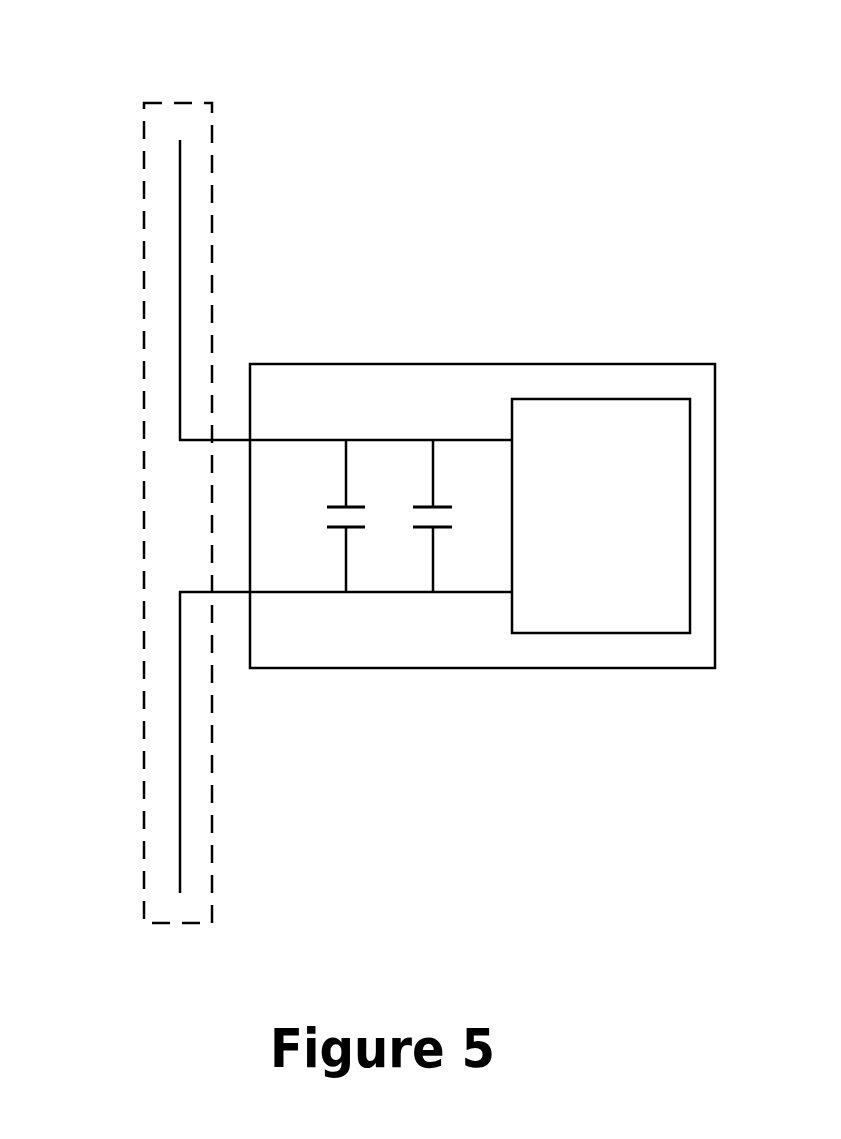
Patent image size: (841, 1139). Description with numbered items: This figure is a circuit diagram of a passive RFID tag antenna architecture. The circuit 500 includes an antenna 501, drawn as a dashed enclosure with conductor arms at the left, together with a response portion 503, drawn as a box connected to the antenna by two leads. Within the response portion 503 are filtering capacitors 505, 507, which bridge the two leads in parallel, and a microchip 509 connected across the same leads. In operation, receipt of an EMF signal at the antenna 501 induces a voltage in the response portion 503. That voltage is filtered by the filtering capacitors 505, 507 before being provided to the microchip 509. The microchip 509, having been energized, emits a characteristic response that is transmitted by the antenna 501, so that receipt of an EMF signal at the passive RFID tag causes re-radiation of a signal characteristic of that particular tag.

The circuit 500 is at (517, 70).
The antenna 501 is at (168, 102).
The response portion 503 is at (310, 402).
The filtering capacitor 505 is at (339, 505).
The filtering capacitor 507 is at (428, 505).
The microchip 509 is at (623, 546).